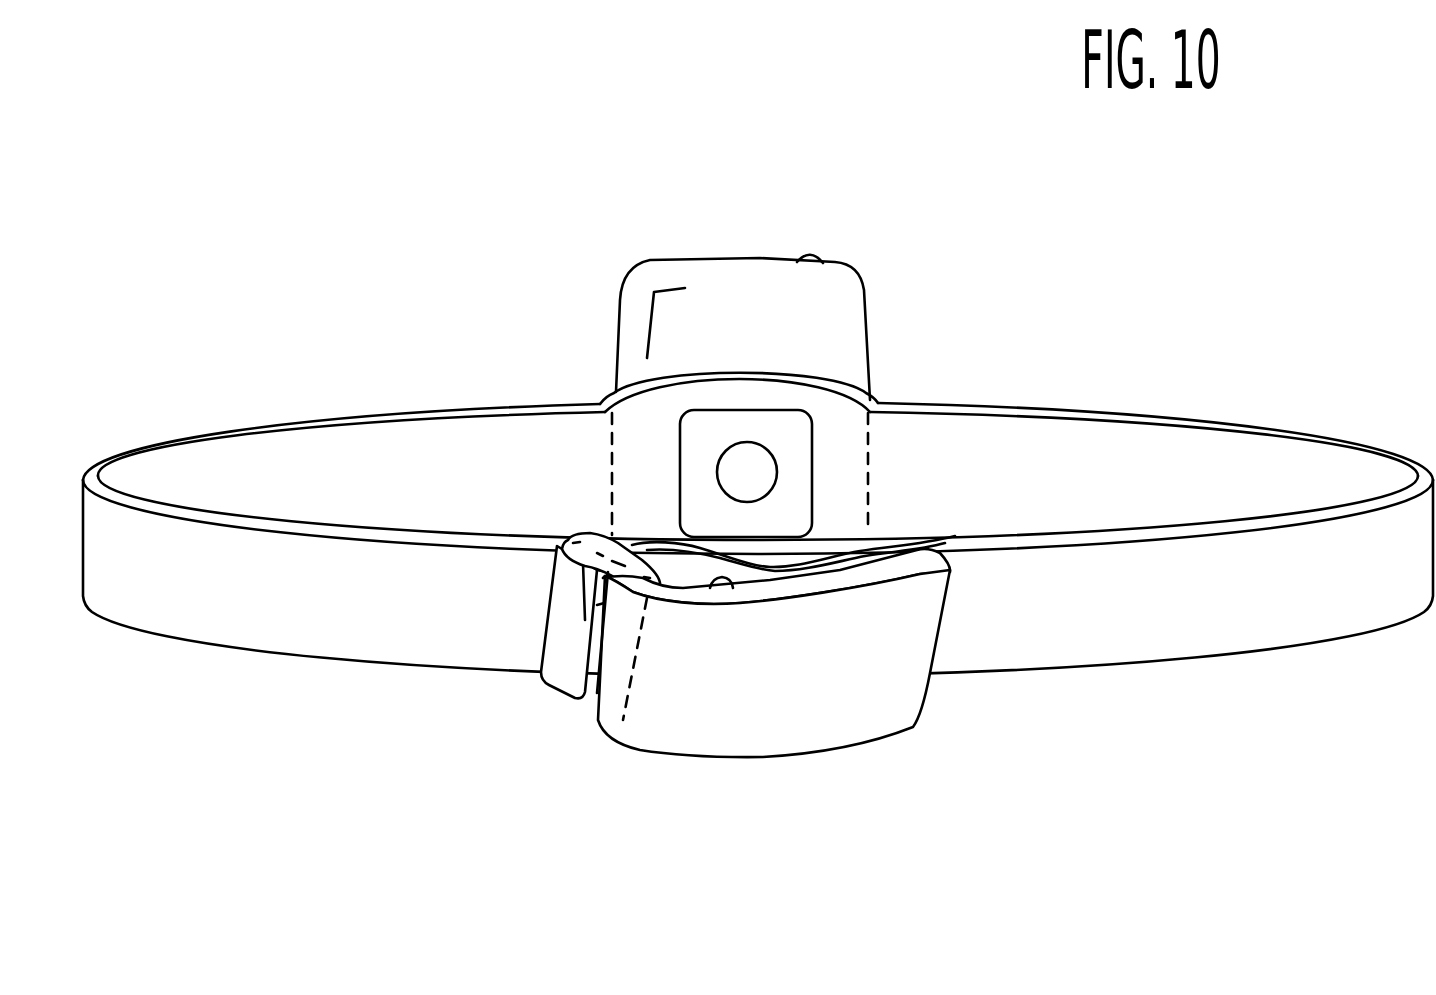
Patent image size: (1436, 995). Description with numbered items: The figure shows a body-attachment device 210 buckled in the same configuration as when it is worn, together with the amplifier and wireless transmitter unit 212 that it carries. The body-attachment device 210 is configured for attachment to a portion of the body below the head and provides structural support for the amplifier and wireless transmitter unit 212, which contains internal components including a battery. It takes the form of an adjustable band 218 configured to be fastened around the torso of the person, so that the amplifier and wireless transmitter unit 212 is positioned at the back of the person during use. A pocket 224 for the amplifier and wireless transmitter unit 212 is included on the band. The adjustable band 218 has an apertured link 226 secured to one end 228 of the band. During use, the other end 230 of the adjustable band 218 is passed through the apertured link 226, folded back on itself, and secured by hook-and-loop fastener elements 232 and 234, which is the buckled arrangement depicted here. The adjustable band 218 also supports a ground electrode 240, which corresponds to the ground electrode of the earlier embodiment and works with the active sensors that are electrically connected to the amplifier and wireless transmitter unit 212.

The body-attachment device 210 is at (1140, 322).
The amplifier and wireless transmitter unit 212 is at (628, 305).
The adjustable band 218 is at (165, 593).
The pocket 224 is at (843, 432).
The apertured link 226 is at (563, 677).
The one end 228 is at (475, 623).
The other end 230 is at (863, 710).
The hook-and-loop fastener element 232 is at (833, 568).
The hook-and-loop fastener element 234 is at (710, 588).
The ground electrode 240 is at (717, 470).